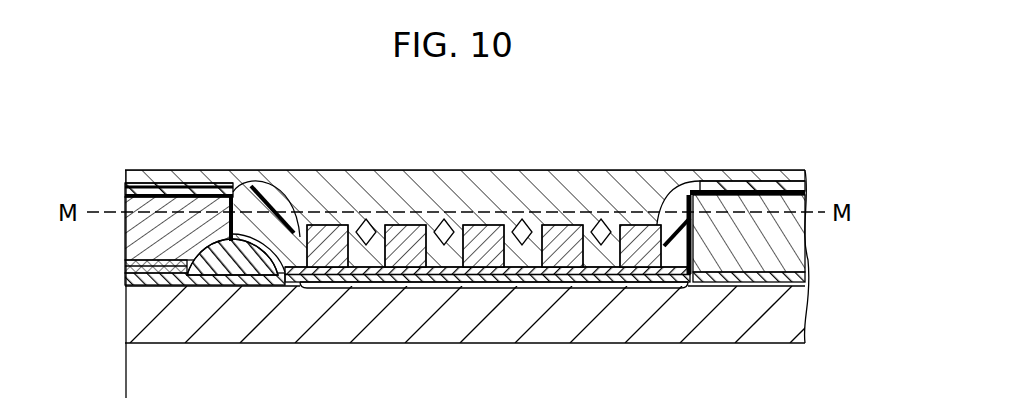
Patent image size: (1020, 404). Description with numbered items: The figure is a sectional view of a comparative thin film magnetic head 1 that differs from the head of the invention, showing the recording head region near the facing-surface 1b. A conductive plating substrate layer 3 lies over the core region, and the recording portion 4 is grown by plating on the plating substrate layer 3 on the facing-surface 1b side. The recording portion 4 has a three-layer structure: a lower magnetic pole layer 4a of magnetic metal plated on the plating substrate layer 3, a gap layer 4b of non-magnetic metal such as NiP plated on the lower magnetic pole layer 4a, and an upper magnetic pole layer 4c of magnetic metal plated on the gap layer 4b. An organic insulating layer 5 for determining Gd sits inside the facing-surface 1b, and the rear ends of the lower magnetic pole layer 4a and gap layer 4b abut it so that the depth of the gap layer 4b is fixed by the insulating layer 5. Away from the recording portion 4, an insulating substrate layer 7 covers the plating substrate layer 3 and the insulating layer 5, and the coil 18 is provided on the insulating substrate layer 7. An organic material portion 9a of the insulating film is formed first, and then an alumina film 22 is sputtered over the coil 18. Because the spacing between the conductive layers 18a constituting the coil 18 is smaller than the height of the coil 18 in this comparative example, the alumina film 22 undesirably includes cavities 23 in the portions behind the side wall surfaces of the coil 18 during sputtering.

The thin film magnetic head 1 is at (125, 383).
The facing-surface 1b is at (127, 325).
The plating substrate layer 3 is at (158, 287).
The recording portion 4 is at (419, 256).
The lower magnetic pole layer 4a is at (436, 294).
The gap layer 4b is at (127, 267).
The upper magnetic pole layer 4c is at (127, 231).
The insulating layer for determining Gd 5 is at (237, 277).
The insulating substrate layer 7 is at (685, 276).
The organic material portion 9a is at (260, 225).
The coil 18 is at (475, 284).
The conductive layers 18a is at (318, 226).
The alumina film 22 is at (557, 192).
The cavities 23 is at (366, 219).